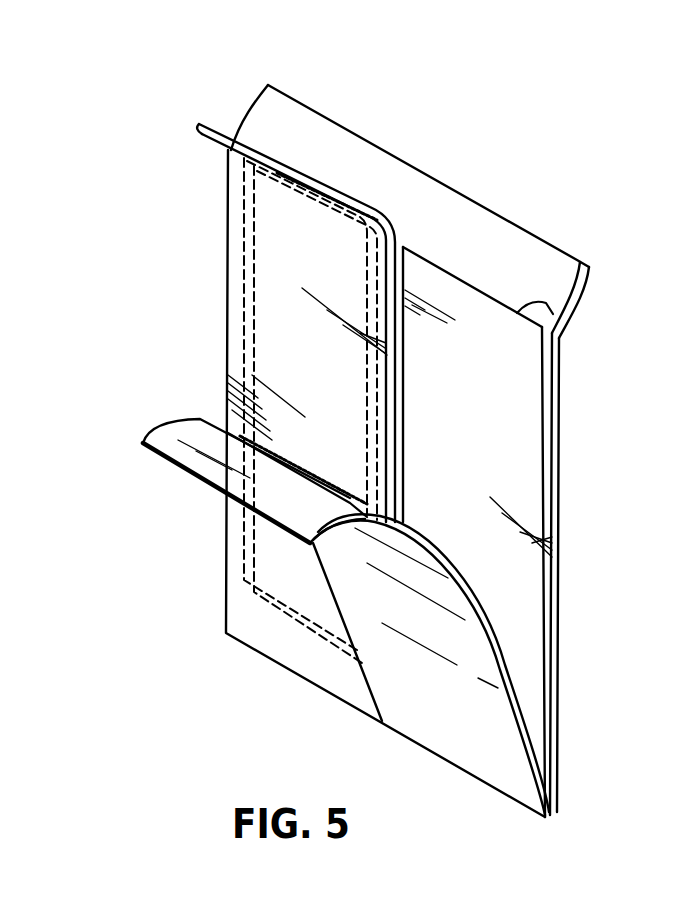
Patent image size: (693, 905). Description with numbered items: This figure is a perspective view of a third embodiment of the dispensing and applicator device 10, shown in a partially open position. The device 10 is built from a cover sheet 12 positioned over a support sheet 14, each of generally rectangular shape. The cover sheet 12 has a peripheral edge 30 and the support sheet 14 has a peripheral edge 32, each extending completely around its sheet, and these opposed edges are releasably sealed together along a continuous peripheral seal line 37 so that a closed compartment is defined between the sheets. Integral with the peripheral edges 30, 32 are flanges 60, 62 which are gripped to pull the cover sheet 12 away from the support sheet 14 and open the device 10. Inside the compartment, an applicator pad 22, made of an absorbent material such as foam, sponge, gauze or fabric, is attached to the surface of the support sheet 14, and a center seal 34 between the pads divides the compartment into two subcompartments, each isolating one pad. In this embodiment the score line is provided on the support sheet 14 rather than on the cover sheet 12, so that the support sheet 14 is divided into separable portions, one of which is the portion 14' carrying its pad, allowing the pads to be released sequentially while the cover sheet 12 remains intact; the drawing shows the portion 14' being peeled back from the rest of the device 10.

The dispensing and applicator device 10 is at (462, 100).
The cover sheet 12 is at (578, 256).
The support sheet 14 is at (213, 481).
The portion of support sheet 14' is at (468, 664).
The applicator pad 22 is at (243, 402).
The peripheral edge of cover sheet 30 is at (552, 517).
The peripheral edge of support sheet 32 is at (233, 292).
The center seal 34 is at (403, 247).
The continuous peripheral seal line 37 is at (560, 313).
The flange 60 is at (315, 122).
The flange 62 is at (220, 130).